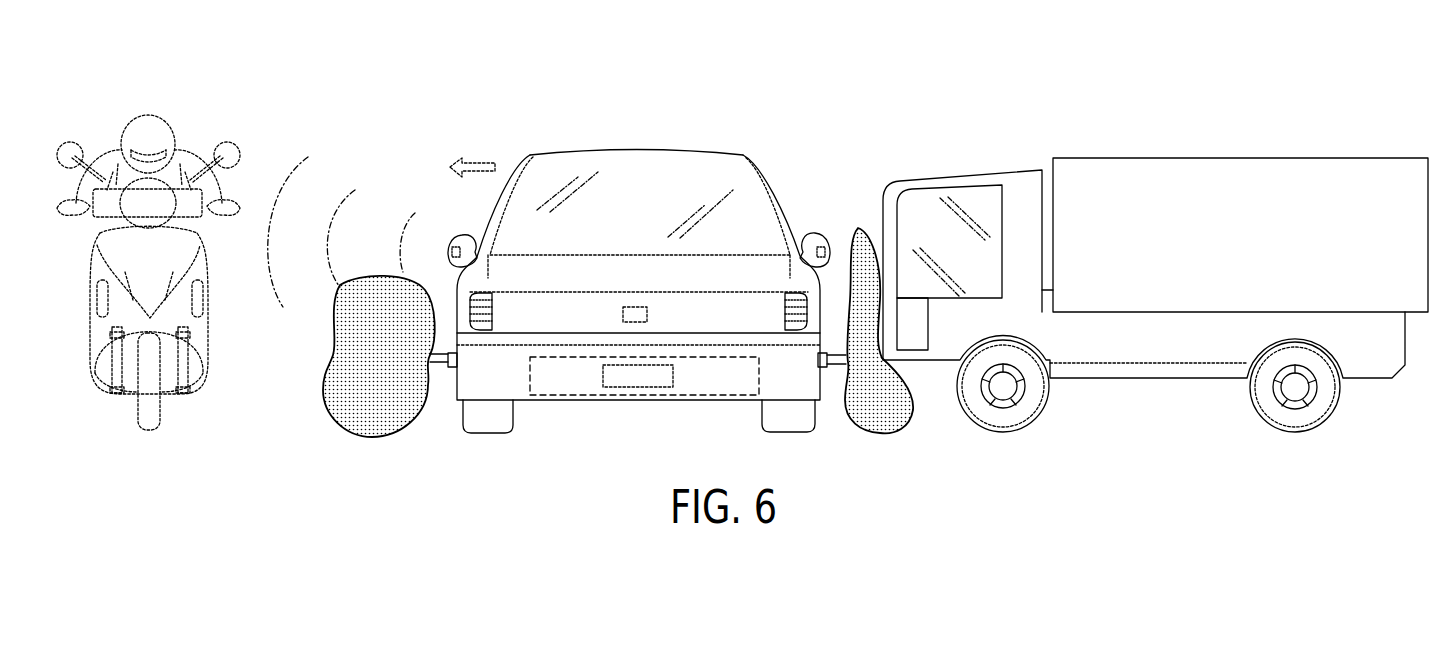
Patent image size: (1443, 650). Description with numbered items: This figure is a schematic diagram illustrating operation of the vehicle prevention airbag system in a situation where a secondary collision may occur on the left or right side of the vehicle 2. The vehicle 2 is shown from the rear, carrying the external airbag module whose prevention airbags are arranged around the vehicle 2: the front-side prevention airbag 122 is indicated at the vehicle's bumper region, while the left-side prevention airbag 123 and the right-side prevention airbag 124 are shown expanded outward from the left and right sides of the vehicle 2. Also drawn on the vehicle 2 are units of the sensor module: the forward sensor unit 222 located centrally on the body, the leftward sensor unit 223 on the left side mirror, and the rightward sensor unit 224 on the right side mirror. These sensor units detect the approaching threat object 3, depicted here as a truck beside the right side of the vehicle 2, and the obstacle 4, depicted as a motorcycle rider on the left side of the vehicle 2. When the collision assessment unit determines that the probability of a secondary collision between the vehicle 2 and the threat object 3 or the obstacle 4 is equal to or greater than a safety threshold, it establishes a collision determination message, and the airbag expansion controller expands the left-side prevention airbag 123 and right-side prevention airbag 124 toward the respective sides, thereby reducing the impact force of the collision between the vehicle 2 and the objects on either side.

The vehicle 2 is at (639, 271).
The threat object 3 is at (1240, 151).
The obstacle 4 is at (148, 108).
The front-side prevention airbag 122 is at (575, 395).
The left-side prevention airbag 123 is at (378, 430).
The right-side prevention airbag 124 is at (880, 427).
The forward sensor unit 222 is at (647, 314).
The leftward sensor unit 223 is at (450, 240).
The rightward sensor unit 224 is at (832, 248).